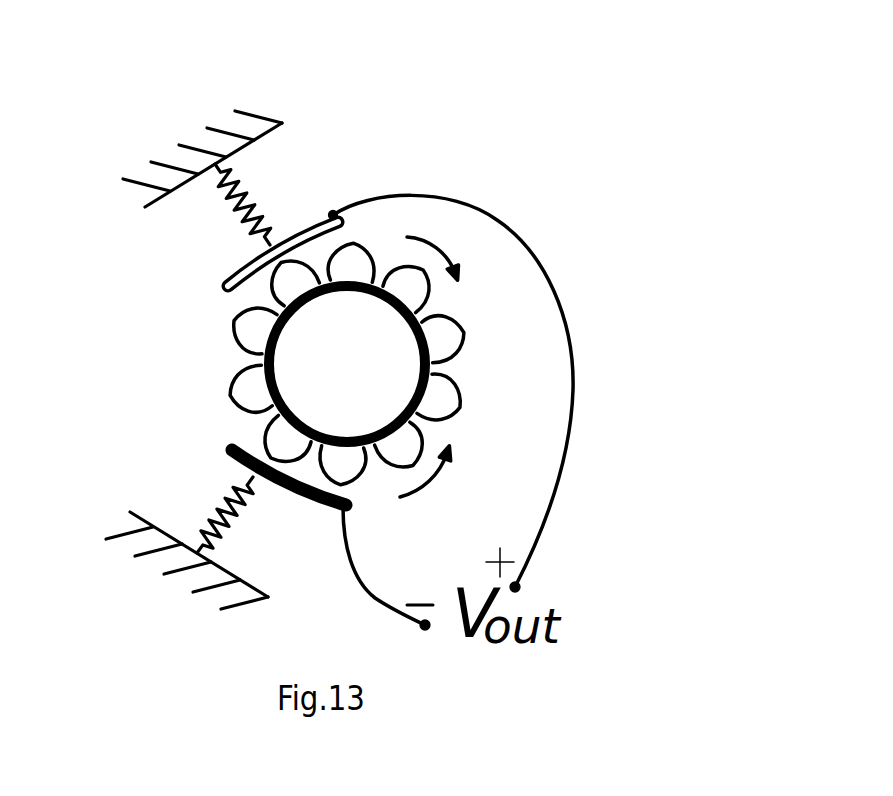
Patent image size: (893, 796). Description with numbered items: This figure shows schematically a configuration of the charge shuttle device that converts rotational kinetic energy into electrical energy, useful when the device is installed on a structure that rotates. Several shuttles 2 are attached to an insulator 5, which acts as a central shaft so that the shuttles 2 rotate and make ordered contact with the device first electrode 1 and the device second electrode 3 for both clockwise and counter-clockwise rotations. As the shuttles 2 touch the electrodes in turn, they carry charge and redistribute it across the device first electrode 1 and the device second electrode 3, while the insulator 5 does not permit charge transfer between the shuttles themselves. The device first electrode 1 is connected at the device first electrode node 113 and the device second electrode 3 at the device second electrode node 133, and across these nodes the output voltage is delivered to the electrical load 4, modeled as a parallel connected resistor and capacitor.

The device first electrode 1 is at (340, 232).
The device first electrode node 113 is at (334, 214).
The shuttle 2 is at (260, 453).
The device second electrode 3 is at (230, 452).
The electrical load 4 is at (530, 603).
The insulator 5 is at (373, 377).
The device second electrode node 133 is at (425, 625).